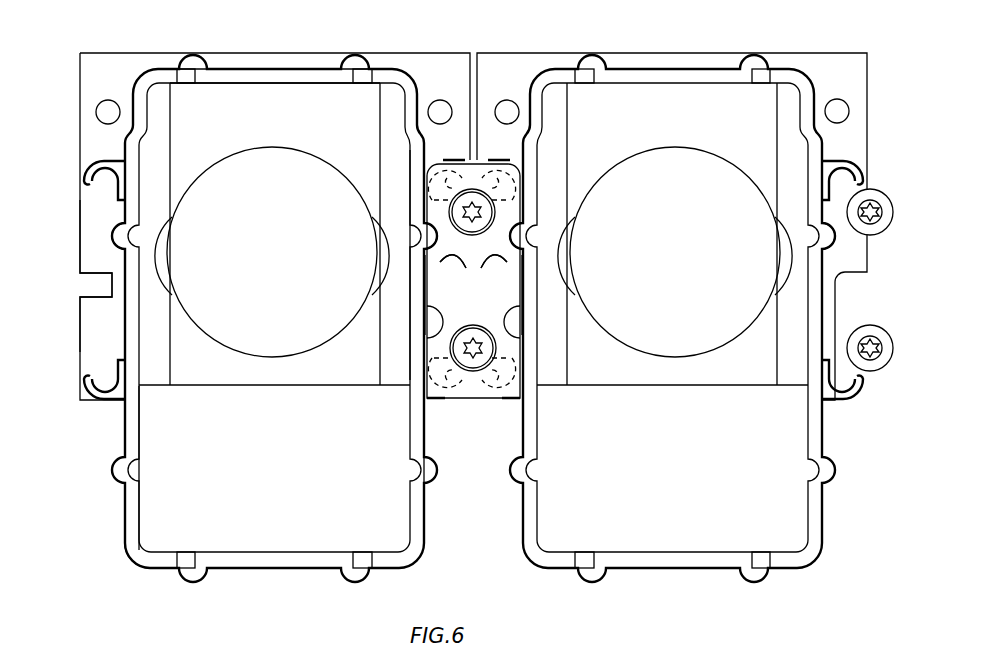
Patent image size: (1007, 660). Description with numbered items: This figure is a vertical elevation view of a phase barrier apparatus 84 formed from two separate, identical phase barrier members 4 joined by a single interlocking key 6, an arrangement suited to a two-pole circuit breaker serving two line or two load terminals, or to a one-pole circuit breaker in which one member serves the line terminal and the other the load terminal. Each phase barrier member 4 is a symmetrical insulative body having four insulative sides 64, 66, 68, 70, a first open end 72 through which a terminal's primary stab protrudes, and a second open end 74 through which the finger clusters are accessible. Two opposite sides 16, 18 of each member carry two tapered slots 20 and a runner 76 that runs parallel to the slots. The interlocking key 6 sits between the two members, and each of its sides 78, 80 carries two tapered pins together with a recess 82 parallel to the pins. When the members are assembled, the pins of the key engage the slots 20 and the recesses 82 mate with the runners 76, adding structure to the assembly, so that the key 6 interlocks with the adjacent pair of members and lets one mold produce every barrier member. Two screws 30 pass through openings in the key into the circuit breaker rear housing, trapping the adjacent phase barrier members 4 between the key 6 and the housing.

The phase barrier member 4 is at (268, 52).
The interlocking key 6 is at (512, 276).
The side 16 is at (120, 308).
The side 18 is at (410, 260).
The slot 20 is at (86, 188).
The screw 30 is at (452, 212).
The insulative side 64 is at (124, 425).
The insulative side 66 is at (385, 70).
The insulative side 68 is at (427, 445).
The insulative side 70 is at (160, 572).
The first open end 72 is at (302, 100).
The second open end 74 is at (275, 530).
The runner 76 is at (140, 231).
The side 78 is at (427, 292).
The side 80 is at (525, 296).
The recess 82 is at (473, 275).
The phase barrier apparatus 84 is at (876, 532).